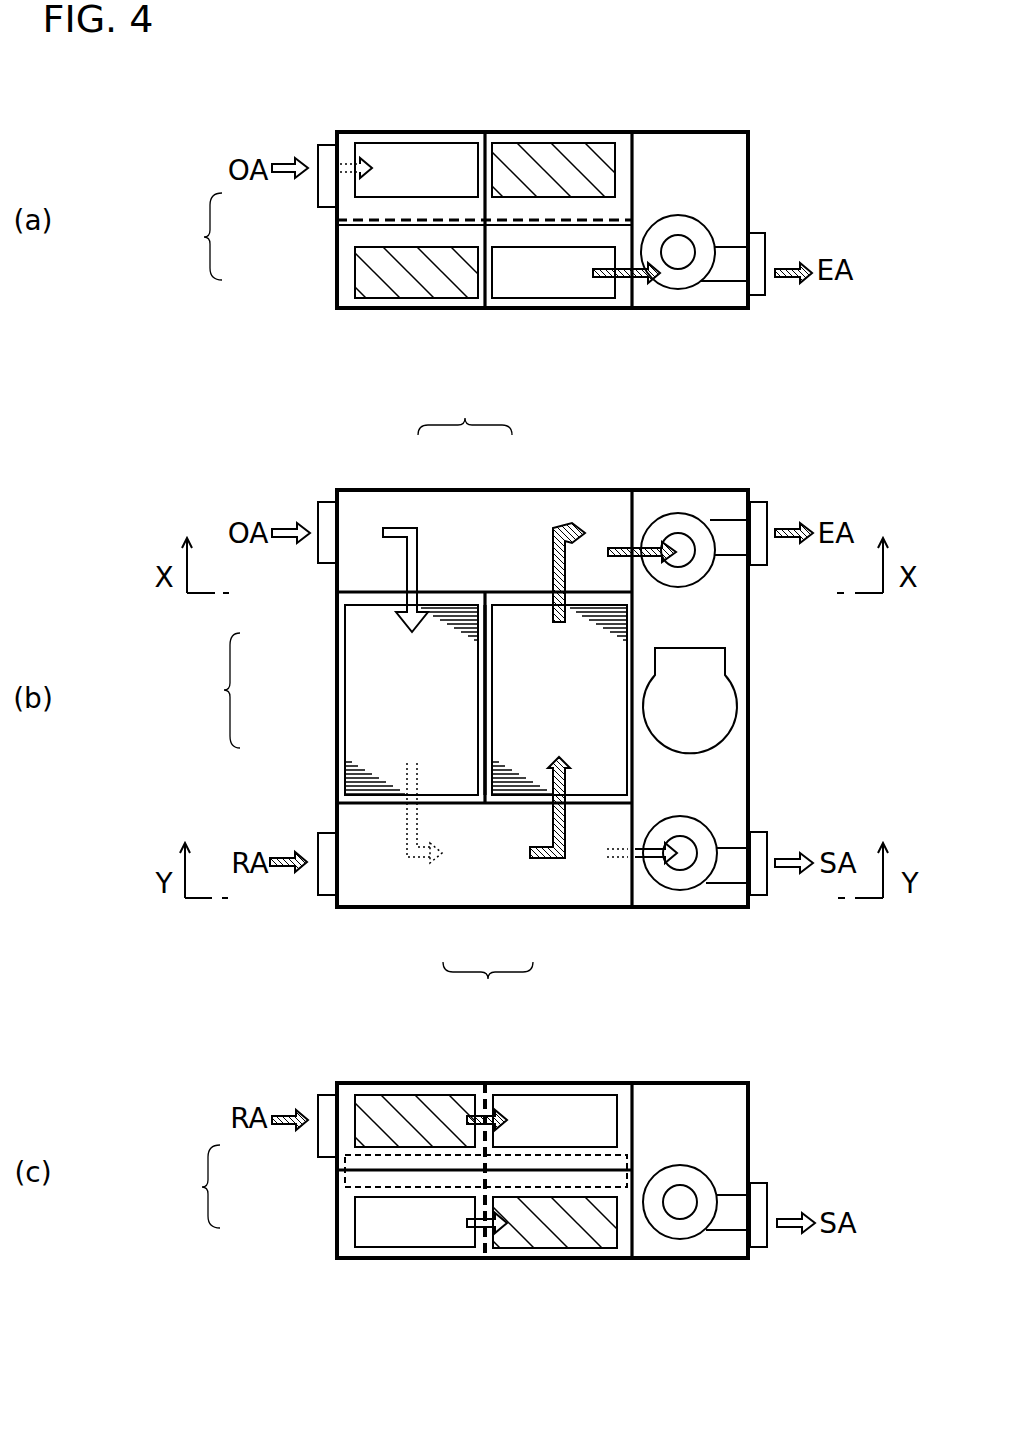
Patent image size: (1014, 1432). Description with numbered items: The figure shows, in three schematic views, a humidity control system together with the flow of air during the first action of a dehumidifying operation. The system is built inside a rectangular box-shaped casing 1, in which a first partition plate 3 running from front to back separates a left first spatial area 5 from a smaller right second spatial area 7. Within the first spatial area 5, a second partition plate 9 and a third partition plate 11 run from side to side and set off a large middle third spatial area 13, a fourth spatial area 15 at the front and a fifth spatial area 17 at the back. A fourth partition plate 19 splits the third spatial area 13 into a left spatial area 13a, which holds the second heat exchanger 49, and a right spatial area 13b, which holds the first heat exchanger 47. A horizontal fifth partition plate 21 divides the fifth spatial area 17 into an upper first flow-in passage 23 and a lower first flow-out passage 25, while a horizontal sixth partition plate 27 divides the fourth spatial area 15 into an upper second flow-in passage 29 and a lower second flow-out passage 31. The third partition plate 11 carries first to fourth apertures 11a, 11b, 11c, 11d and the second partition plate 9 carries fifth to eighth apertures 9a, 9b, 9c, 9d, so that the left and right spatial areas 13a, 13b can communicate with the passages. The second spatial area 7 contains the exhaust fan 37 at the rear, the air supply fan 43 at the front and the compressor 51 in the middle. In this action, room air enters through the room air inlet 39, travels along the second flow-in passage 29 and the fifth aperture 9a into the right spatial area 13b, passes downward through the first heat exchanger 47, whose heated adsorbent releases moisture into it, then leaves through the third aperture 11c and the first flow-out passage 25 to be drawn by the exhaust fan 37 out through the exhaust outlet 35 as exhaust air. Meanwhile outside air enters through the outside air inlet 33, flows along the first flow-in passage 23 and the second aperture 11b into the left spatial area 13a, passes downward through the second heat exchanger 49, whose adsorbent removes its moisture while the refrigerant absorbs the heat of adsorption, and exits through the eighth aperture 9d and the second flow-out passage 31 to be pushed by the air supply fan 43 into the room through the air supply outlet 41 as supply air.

The casing 1 is at (748, 157).
The first partition plate 3 is at (636, 150).
The first spatial area 5 is at (345, 300).
The second spatial area 7 is at (700, 292).
The second partition plate 9 is at (500, 808).
The fifth aperture 9a is at (547, 1100).
The sixth aperture 9b is at (412, 1100).
The seventh aperture 9c is at (525, 1240).
The eighth aperture 9d is at (392, 1240).
The third partition plate 11 is at (625, 147).
The first aperture 11a is at (545, 150).
The second aperture 11b is at (397, 150).
The third aperture 11c is at (553, 290).
The fourth aperture 11d is at (420, 290).
The third spatial area 13 is at (335, 700).
The left spatial area 13a is at (343, 238).
The right spatial area 13b is at (627, 298).
The fourth spatial area 15 is at (478, 1100).
The fifth spatial area 17 is at (336, 314).
The fourth partition plate 19 is at (483, 150).
The fifth partition plate 21 is at (608, 218).
The first flow-in passage 23 is at (372, 183).
The first flow-out passage 25 is at (372, 272).
The sixth partition plate 27 is at (610, 885).
The second flow-in passage 29 is at (455, 888).
The second flow-out passage 31 is at (514, 880).
The outside air inlet 33 is at (330, 145).
The exhaust outlet 35 is at (760, 298).
The exhaust fan 37 is at (708, 228).
The room air inlet 39 is at (328, 833).
The air supply outlet 41 is at (763, 832).
The air supply fan 43 is at (694, 822).
The first heat exchanger 47 is at (580, 602).
The second heat exchanger 49 is at (377, 602).
The compressor 51 is at (677, 648).